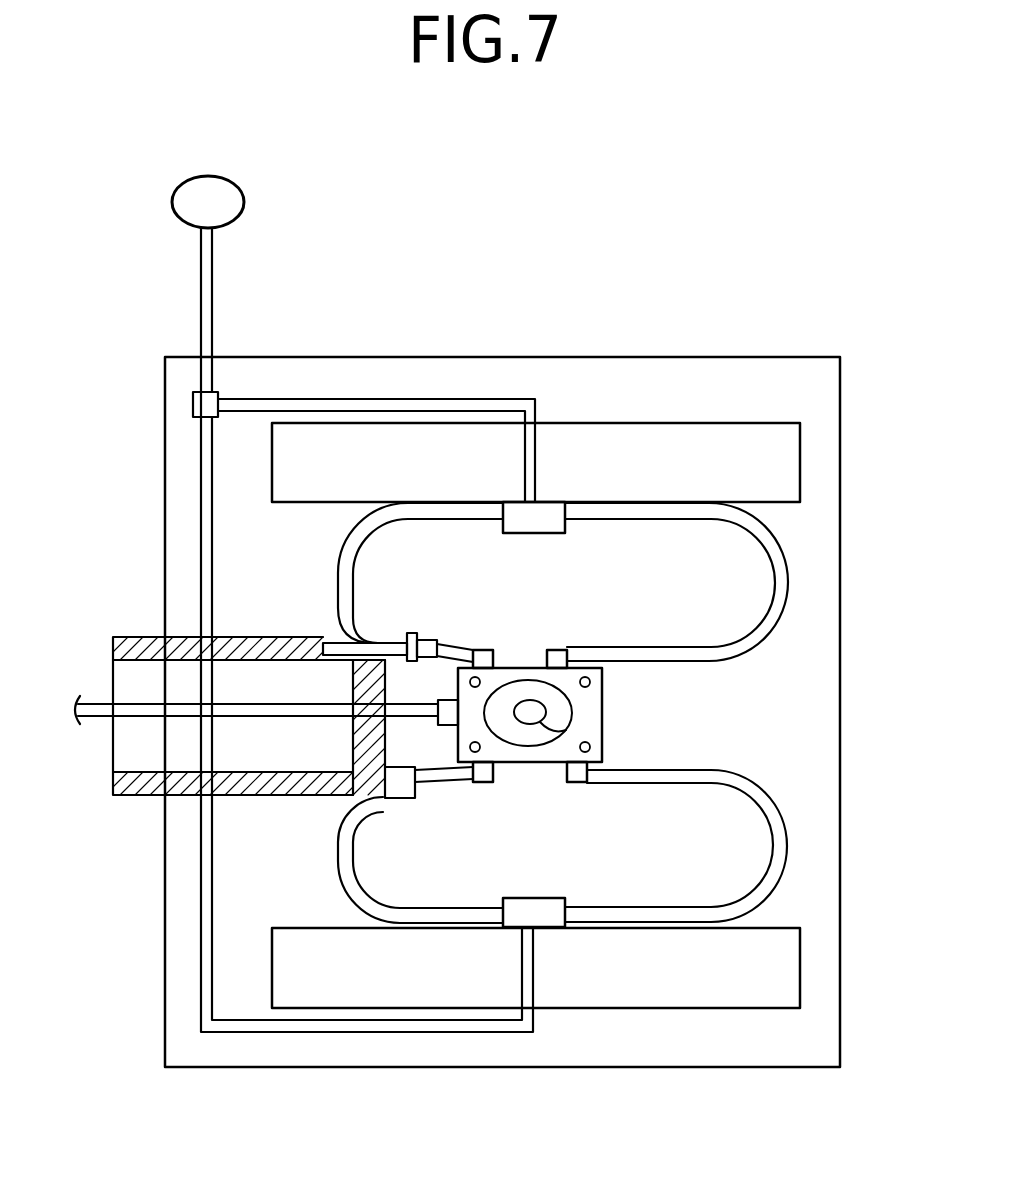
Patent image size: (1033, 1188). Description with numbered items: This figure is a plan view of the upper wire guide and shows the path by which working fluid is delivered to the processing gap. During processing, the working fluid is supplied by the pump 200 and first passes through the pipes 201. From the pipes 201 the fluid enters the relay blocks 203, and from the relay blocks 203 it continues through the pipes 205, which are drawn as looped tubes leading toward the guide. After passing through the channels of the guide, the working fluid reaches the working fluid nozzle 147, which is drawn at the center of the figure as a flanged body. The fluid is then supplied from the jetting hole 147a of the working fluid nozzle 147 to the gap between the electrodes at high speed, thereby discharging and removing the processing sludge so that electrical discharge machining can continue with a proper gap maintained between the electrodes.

The pump 200 is at (245, 185).
The pipes 201 is at (438, 398).
The relay blocks 203 is at (547, 511).
The pipes 205 is at (786, 546).
The working fluid nozzle 147 is at (573, 706).
The jetting hole 147a is at (546, 718).